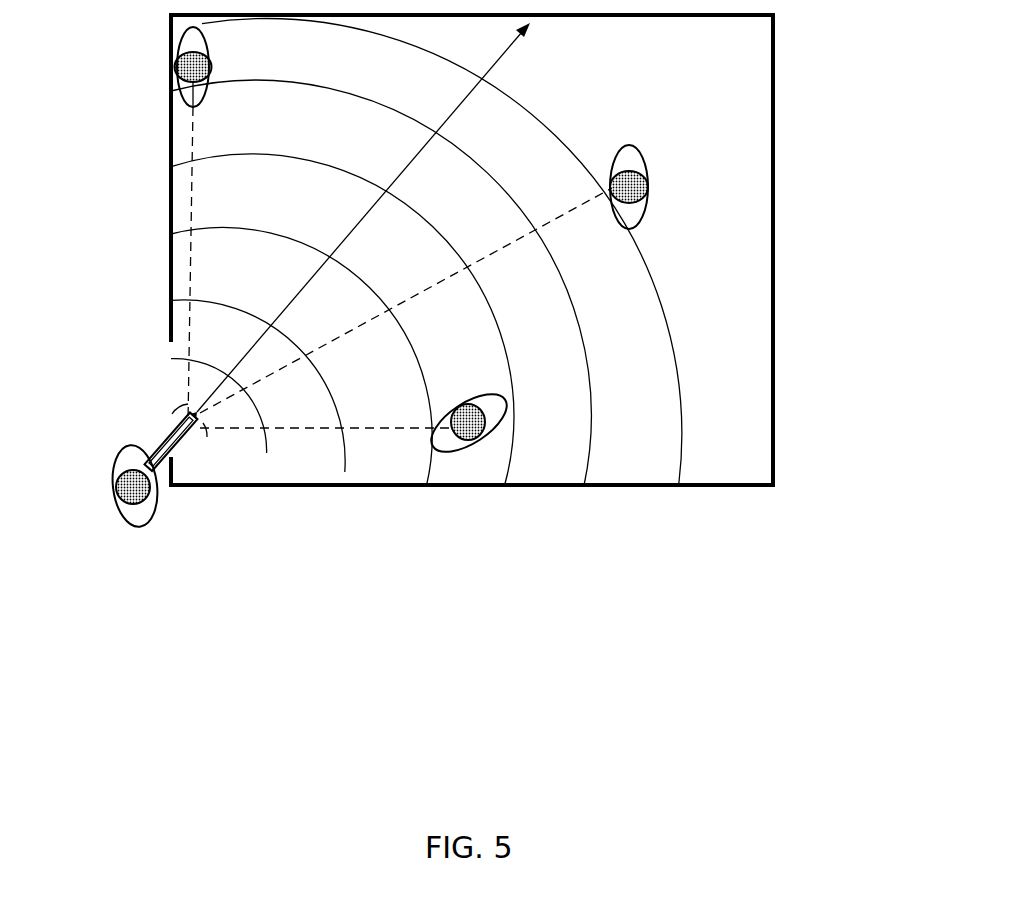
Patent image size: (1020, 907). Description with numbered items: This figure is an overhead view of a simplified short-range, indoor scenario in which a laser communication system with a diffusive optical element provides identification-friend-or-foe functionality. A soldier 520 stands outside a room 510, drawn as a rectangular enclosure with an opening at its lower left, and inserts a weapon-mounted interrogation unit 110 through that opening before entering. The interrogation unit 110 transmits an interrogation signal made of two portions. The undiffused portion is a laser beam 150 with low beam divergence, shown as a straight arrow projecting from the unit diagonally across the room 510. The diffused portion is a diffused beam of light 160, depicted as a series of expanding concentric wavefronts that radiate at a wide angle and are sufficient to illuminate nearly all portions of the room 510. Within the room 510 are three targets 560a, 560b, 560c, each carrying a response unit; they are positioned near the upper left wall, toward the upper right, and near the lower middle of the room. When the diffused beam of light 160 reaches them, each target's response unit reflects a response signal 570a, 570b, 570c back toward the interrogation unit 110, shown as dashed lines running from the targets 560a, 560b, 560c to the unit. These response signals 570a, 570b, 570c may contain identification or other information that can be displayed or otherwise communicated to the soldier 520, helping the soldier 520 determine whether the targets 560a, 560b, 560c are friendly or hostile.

The interrogation unit 110 is at (122, 452).
The laser beam 150 is at (500, 62).
The diffused beam of light 160 is at (258, 233).
The room 510 is at (775, 107).
The soldier 520 is at (108, 493).
The target 560a is at (214, 68).
The target 560b is at (650, 187).
The target 560c is at (466, 404).
The response signal 570a is at (192, 138).
The response signal 570b is at (523, 236).
The response signal 570c is at (323, 430).